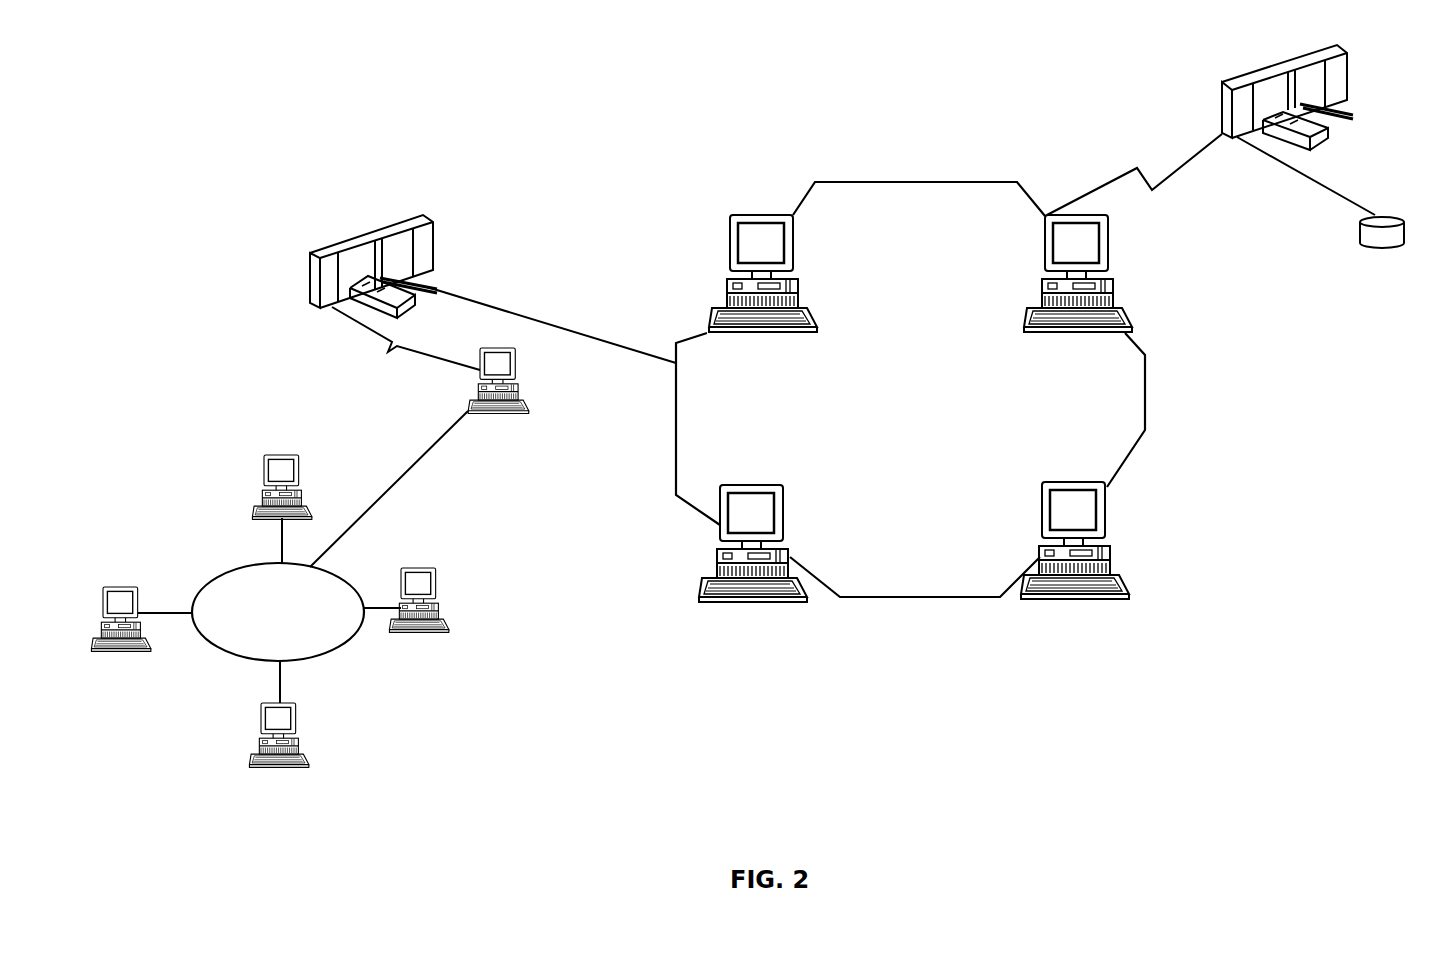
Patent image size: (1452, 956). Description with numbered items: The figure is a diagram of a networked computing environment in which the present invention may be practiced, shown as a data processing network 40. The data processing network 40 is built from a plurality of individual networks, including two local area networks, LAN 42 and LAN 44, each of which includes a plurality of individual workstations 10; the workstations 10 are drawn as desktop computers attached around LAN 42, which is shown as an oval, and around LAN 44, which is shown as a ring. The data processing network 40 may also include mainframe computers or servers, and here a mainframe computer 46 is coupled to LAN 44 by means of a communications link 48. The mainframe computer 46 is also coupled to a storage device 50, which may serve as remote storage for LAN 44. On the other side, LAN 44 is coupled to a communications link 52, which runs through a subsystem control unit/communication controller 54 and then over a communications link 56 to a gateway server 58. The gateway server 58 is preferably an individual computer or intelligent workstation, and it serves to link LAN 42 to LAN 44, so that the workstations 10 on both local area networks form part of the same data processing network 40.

The workstation 10 is at (745, 214).
The data processing network 40 is at (930, 168).
The LAN 42 is at (269, 610).
The LAN 44 is at (910, 389).
The mainframe computer 46 is at (1297, 63).
The communications link 48 is at (1137, 168).
The storage device 50 is at (1393, 216).
The communications link 52 is at (558, 328).
The subsystem control unit/communication controller 54 is at (423, 217).
The communications link 56 is at (350, 323).
The gateway server 58 is at (492, 348).